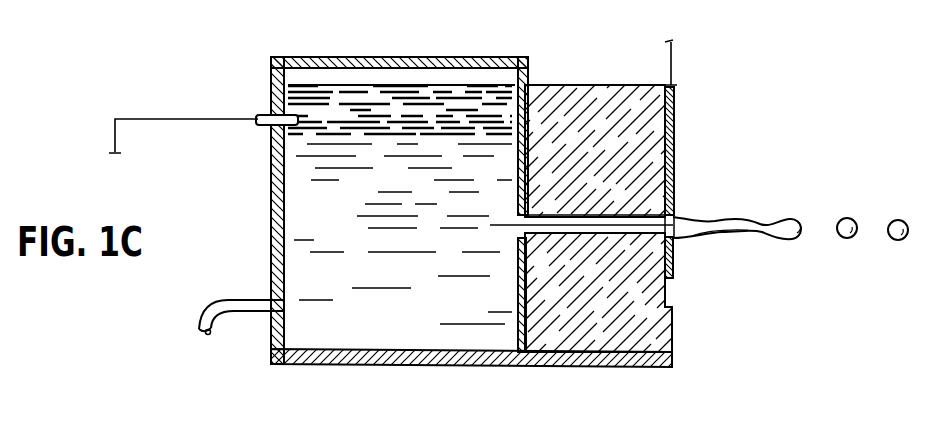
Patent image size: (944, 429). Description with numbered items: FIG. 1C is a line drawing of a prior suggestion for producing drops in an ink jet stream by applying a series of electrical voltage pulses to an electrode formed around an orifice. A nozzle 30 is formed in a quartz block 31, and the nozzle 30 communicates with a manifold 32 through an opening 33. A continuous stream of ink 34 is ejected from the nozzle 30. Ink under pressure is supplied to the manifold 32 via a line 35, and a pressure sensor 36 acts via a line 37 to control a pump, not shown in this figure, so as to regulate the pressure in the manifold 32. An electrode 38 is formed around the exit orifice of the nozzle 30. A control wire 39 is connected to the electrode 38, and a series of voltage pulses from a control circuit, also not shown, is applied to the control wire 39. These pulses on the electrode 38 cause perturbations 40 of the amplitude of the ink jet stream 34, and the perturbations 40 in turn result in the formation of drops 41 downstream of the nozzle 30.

The nozzle 30 is at (677, 184).
The quartz block 31 is at (583, 90).
The manifold 32 is at (421, 63).
The opening 33 is at (522, 241).
The ink jet stream 34 is at (701, 207).
The line 35 is at (236, 303).
The pressure sensor 36 is at (262, 114).
The line 37 is at (114, 137).
The electrode 38 is at (676, 135).
The control wire 39 is at (673, 65).
The perturbations 40 is at (740, 238).
The drops 41 is at (892, 241).